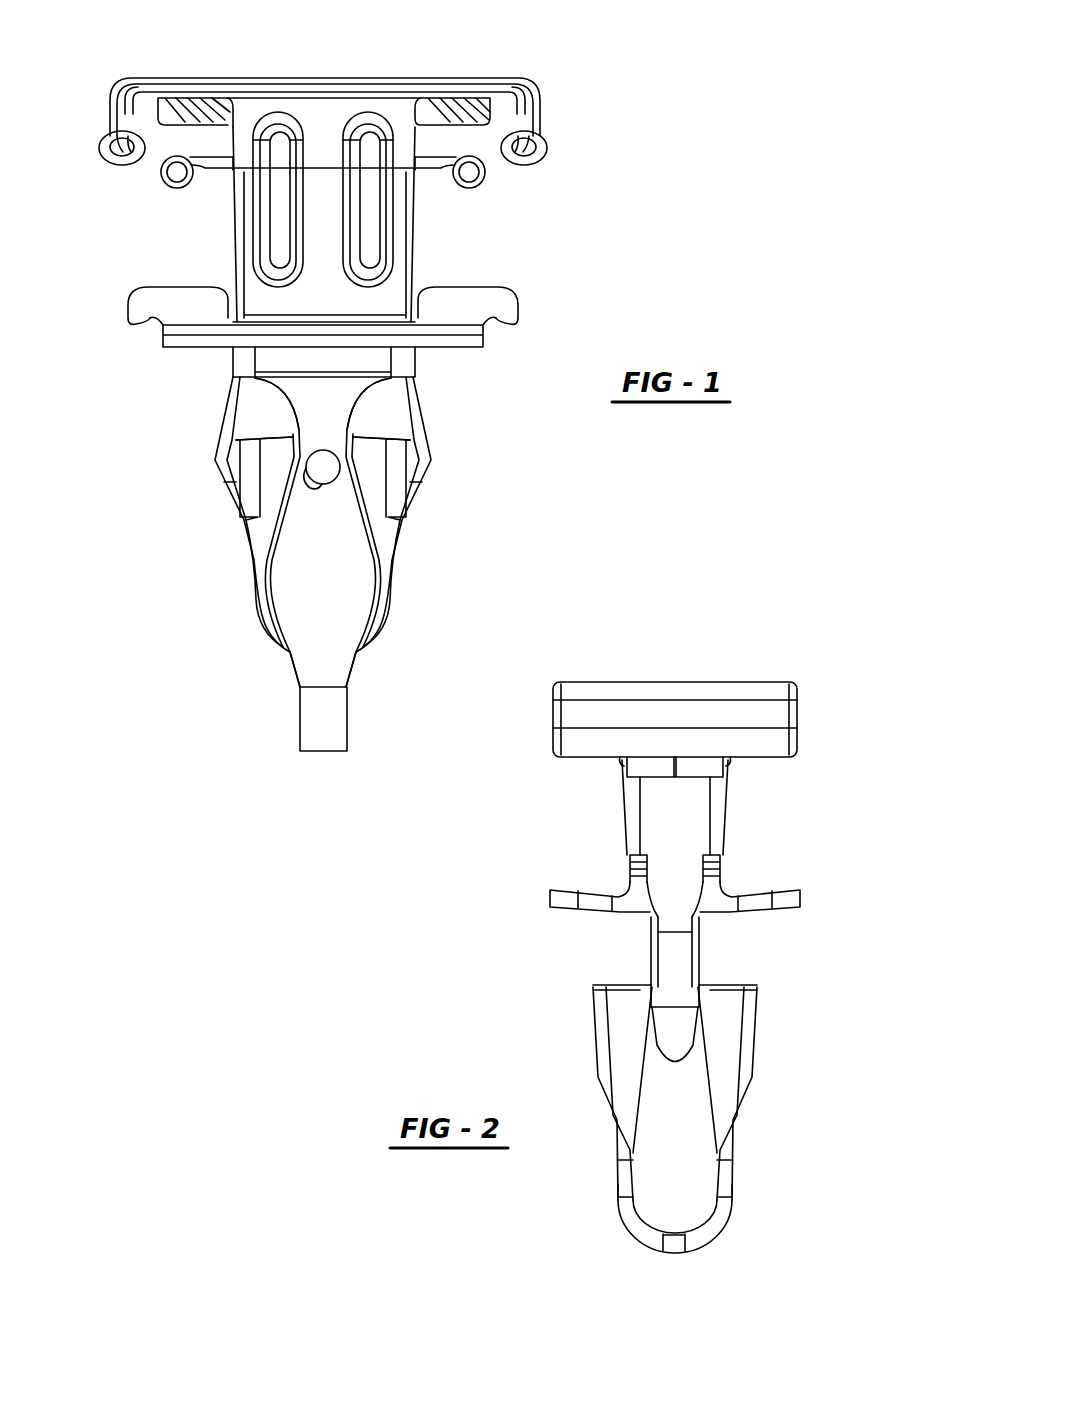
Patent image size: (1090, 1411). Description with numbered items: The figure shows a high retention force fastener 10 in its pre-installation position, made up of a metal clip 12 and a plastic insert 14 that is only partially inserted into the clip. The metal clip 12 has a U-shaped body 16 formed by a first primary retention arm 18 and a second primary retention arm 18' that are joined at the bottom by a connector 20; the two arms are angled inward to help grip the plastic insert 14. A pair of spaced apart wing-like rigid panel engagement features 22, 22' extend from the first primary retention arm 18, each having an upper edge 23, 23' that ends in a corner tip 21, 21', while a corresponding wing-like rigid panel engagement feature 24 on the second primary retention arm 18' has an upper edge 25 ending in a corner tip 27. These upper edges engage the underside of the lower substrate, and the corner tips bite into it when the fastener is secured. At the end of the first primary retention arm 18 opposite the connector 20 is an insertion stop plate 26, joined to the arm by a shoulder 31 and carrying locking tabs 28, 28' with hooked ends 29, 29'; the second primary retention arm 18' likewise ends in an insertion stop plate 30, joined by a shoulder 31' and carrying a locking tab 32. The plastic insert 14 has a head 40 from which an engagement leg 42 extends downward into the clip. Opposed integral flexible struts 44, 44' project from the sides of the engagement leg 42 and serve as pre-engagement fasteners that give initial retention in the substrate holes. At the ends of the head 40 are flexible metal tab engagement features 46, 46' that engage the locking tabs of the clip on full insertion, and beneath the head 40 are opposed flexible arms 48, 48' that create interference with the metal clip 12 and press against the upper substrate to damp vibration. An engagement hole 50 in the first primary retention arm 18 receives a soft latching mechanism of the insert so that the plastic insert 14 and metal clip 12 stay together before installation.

In FIG. 1, the high retention force fastener 10 is at (571, 76).
In FIG. 2, the high retention force fastener 10 is at (813, 628).
In FIG. 2, the metal clip 12 is at (722, 1085).
In FIG. 1, the plastic insert 14 is at (326, 110).
In FIG. 2, the plastic insert 14 is at (704, 716).
In FIG. 1, the U-shaped body 16 is at (334, 660).
In FIG. 2, the U-shaped body 16 is at (626, 1190).
In FIG. 1, the first primary retention arm 18 is at (262, 680).
In FIG. 2, the first primary retention arm 18 is at (588, 1168).
In FIG. 2, the second primary retention arm 18' is at (772, 1170).
In FIG. 1, the connector 20 is at (320, 737).
In FIG. 2, the connector 20 is at (678, 1242).
In FIG. 1, the corner tip 21 is at (242, 400).
In FIG. 1, the corner tip 21' is at (410, 394).
In FIG. 2, the corner tip 21' is at (559, 1087).
In FIG. 1, the wing-like rigid panel engagement feature 22 is at (221, 532).
In FIG. 1, the wing-like rigid panel engagement feature 22' is at (432, 532).
In FIG. 2, the wing-like rigid panel engagement feature 22' is at (584, 1093).
In FIG. 1, the upper edge 23 is at (209, 412).
In FIG. 1, the upper edge 23' is at (435, 403).
In FIG. 2, the upper edge 23' is at (578, 966).
In FIG. 2, the wing-like rigid panel engagement feature 24 is at (721, 1045).
In FIG. 2, the upper edge 25 is at (720, 985).
In FIG. 1, the insertion stop plate 26 is at (206, 332).
In FIG. 2, the insertion stop plate 26 is at (560, 898).
In FIG. 2, the corner tip 27 is at (757, 987).
In FIG. 1, the locking tab 28 is at (143, 295).
In FIG. 1, the locking tab 28' is at (519, 295).
In FIG. 2, the locking tab 28' is at (564, 847).
In FIG. 1, the hooked end 29 is at (104, 335).
In FIG. 1, the hooked end 29' is at (534, 339).
In FIG. 2, the insertion stop plate 30 is at (786, 897).
In FIG. 2, the shoulder 31 is at (608, 961).
In FIG. 2, the shoulder 31' is at (747, 958).
In FIG. 2, the locking tab 32 is at (712, 868).
In FIG. 1, the head 40 is at (236, 78).
In FIG. 2, the head 40 is at (604, 696).
In FIG. 1, the engagement leg 42 is at (395, 241).
In FIG. 2, the engagement leg 42 is at (682, 806).
In FIG. 1, the integral flexible strut 44 is at (200, 514).
In FIG. 1, the integral flexible strut 44' is at (444, 514).
In FIG. 2, the integral flexible strut 44' is at (757, 996).
In FIG. 1, the metal tab engagement feature 46 is at (92, 166).
In FIG. 1, the metal tab engagement feature 46' is at (570, 145).
In FIG. 1, the flexible arm 48 is at (323, 320).
In FIG. 1, the flexible arm 48' is at (499, 193).
In FIG. 2, the flexible arm 48' is at (614, 781).
In FIG. 1, the engagement hole 50 is at (322, 484).